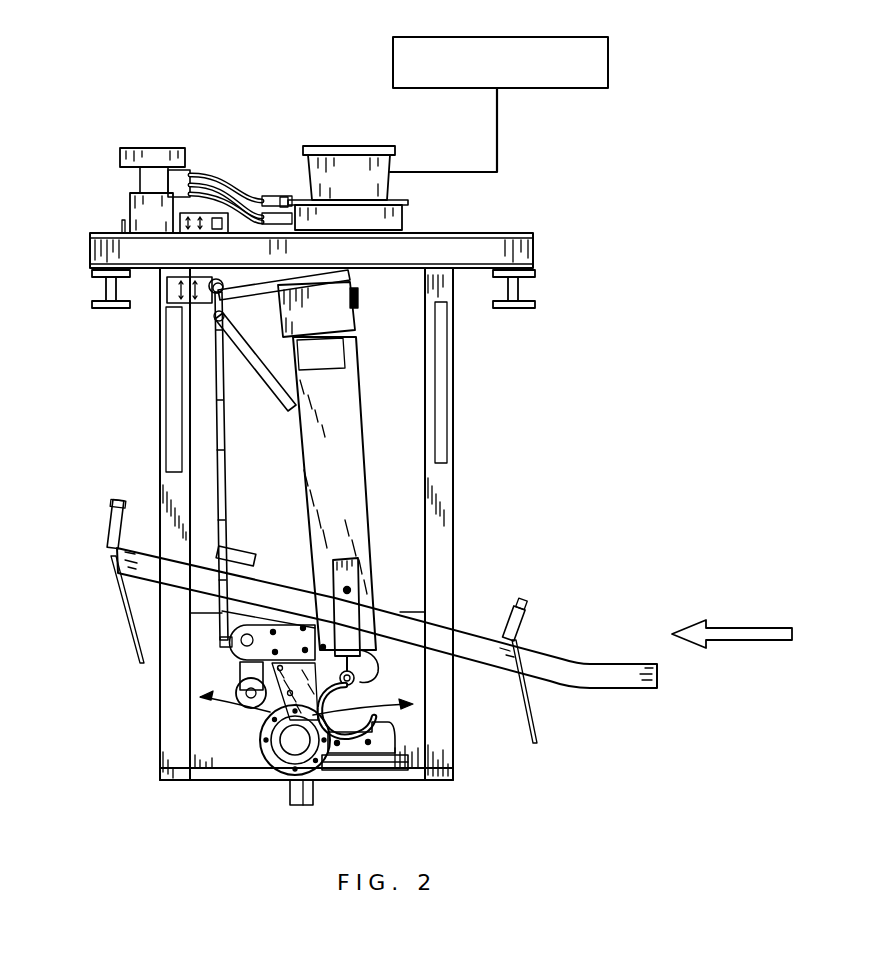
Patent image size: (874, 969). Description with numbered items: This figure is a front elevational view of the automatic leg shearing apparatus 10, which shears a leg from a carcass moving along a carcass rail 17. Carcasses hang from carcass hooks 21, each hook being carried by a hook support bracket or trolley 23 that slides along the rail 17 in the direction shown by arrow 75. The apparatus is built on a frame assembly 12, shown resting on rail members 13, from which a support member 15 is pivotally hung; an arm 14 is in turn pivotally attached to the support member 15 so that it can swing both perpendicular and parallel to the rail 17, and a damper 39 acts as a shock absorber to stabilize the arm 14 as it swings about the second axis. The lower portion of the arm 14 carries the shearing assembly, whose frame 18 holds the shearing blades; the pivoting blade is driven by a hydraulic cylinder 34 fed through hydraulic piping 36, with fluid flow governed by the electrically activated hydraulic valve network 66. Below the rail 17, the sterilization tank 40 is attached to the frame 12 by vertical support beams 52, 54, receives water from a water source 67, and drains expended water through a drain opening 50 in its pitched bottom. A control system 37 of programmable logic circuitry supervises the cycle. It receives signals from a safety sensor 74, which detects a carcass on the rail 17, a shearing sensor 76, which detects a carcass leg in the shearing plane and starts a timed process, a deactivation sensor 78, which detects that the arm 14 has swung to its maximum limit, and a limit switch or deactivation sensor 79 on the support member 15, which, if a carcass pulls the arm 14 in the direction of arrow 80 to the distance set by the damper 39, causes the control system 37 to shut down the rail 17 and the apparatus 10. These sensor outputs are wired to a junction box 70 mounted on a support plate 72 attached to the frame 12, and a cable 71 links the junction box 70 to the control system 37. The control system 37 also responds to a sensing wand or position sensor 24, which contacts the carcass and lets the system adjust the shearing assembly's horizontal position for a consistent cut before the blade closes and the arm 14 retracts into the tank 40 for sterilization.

The automatic leg shearing apparatus 10 is at (572, 220).
The frame assembly 12 is at (534, 248).
The I-beam rails 13 is at (109, 310).
The arm 14 is at (345, 420).
The support member 15 is at (268, 294).
The carcass rail 17 is at (550, 667).
The frame 18 is at (378, 670).
The carcass hook 21 is at (372, 722).
The hook support bracket or trolley 23 is at (368, 560).
The sensing wand or position sensor 24 is at (378, 772).
The hydraulic cylinder 34 is at (253, 570).
The hydraulic piping 36 is at (224, 492).
The control system 37 is at (505, 74).
The damper 39 is at (262, 362).
The sterilization tank 40 is at (160, 741).
The drain opening 50 is at (288, 795).
The vertical support beam 52 is at (160, 425).
The vertical support beam 54 is at (453, 398).
The electrically activated hydraulic valve network 66 is at (150, 148).
The water source 67 is at (214, 180).
The junction box 70 is at (362, 146).
The cable 71 is at (499, 113).
The support plate 72 is at (396, 220).
The safety sensor 74 is at (537, 741).
The arrow 75 is at (750, 640).
The shearing sensor 76 is at (358, 682).
The deactivation sensor 78 is at (131, 628).
The limit switch or deactivation sensor 79 is at (167, 302).
The arrow 80 is at (273, 713).